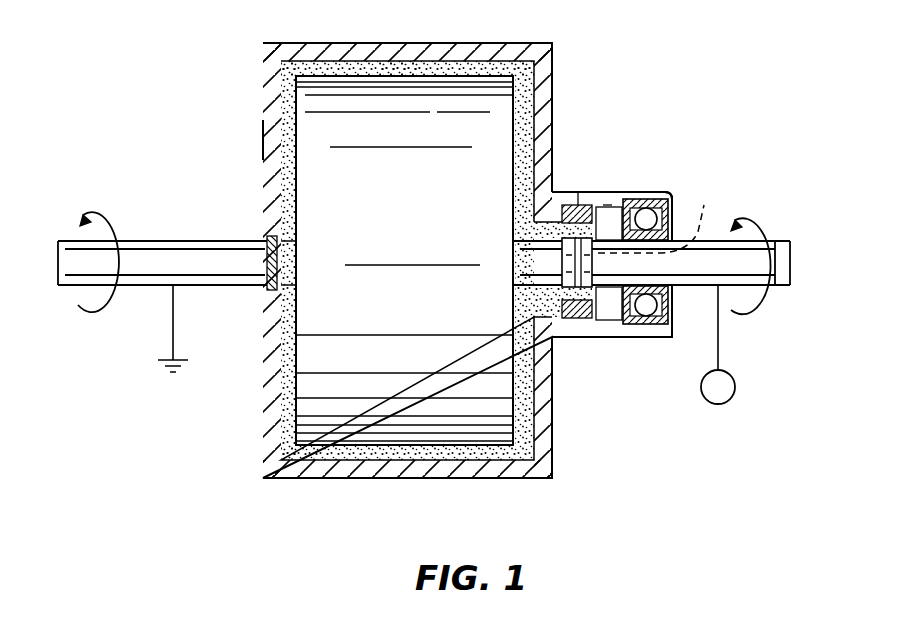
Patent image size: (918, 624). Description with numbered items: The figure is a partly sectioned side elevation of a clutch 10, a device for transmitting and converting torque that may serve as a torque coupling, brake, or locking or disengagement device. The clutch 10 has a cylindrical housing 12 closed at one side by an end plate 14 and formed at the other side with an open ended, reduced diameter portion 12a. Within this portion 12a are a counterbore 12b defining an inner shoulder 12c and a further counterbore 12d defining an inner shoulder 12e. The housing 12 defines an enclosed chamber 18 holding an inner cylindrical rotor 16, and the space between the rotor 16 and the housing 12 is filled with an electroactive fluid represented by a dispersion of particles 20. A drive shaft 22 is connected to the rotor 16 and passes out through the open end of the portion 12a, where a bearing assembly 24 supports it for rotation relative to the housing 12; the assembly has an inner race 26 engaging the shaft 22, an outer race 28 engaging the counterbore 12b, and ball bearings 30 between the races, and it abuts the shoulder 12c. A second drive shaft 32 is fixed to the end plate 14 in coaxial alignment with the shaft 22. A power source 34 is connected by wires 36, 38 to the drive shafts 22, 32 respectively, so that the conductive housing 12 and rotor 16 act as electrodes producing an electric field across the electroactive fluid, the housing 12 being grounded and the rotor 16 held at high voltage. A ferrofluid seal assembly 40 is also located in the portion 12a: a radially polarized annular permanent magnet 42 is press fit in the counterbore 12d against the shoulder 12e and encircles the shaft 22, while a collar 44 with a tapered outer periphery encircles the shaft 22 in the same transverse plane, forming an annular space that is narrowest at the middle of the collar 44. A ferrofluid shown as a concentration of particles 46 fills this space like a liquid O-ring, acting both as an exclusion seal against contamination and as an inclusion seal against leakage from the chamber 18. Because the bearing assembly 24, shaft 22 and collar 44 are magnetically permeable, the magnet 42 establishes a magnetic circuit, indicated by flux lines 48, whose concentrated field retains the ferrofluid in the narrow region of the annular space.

The clutch 10 is at (178, 99).
The housing 12 is at (516, 43).
The reduced diameter portion 12a is at (558, 192).
The counterbore 12b is at (666, 192).
The inner shoulder 12c is at (632, 196).
The counterbore 12d is at (603, 192).
The inner shoulder 12e is at (570, 205).
The end plate 14 is at (263, 138).
The rotor 16 is at (390, 247).
The enclosed chamber 18 is at (322, 60).
The particles 20 is at (398, 62).
The drive shaft 22 is at (790, 241).
The bearing assembly 24 is at (683, 192).
The inner race 26 is at (620, 326).
The outer race 28 is at (652, 338).
The ball bearings 30 is at (672, 304).
The drive shaft 32 is at (175, 241).
The power source 34 is at (735, 391).
The wire 36 is at (718, 337).
The wire 38 is at (173, 326).
The ferrofluid seal assembly 40 is at (560, 312).
The annular permanent magnet 42 is at (577, 327).
The collar 44 is at (562, 258).
The particles 46 is at (600, 325).
The flux lines 48 is at (659, 216).